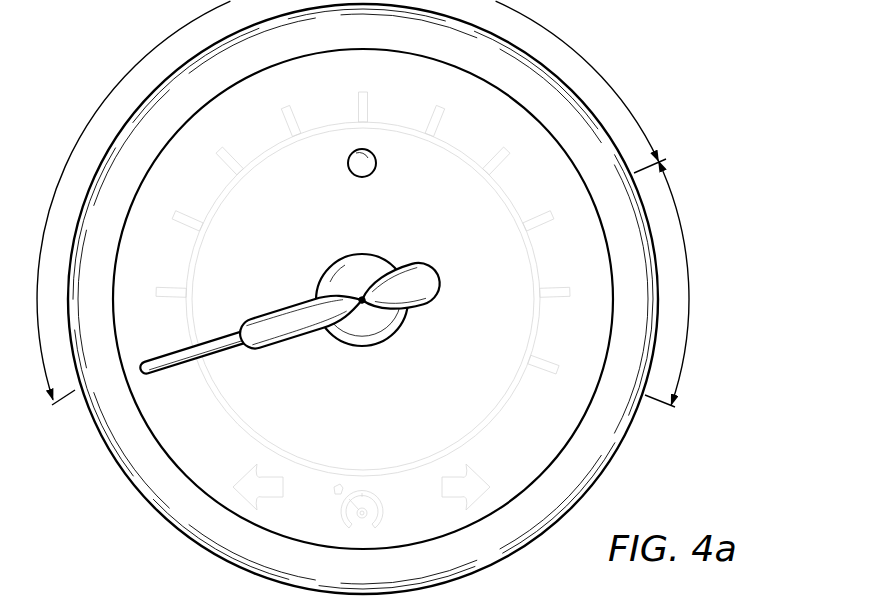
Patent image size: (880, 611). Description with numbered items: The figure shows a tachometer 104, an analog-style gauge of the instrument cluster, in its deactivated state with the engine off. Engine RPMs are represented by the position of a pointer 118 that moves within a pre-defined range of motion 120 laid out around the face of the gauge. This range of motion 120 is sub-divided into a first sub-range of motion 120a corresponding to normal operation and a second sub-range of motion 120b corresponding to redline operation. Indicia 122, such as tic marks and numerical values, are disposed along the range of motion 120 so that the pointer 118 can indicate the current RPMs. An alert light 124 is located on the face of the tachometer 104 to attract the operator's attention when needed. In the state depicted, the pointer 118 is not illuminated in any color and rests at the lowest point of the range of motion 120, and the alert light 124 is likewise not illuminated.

The tachometer 104 is at (108, 456).
The pointer 118 is at (186, 375).
The range of motion 120 is at (120, 61).
The first sub-range of motion 120a is at (606, 83).
The second sub-range of motion 120b is at (683, 240).
The indicia 122 is at (553, 407).
The alert light 124 is at (348, 173).